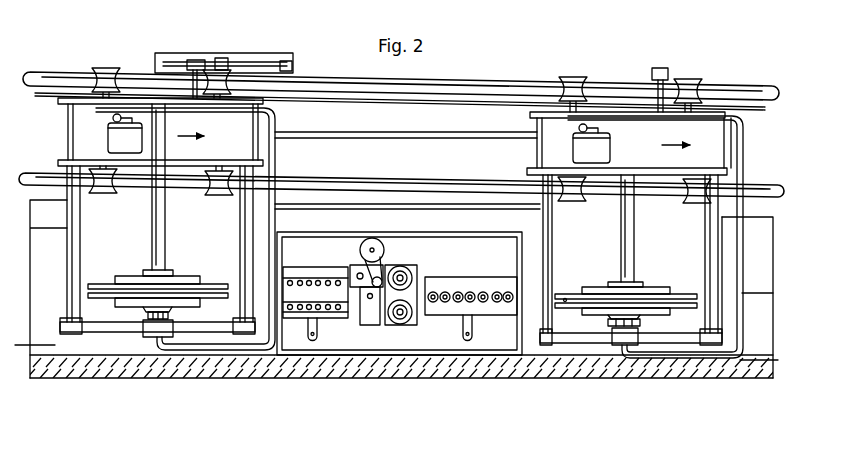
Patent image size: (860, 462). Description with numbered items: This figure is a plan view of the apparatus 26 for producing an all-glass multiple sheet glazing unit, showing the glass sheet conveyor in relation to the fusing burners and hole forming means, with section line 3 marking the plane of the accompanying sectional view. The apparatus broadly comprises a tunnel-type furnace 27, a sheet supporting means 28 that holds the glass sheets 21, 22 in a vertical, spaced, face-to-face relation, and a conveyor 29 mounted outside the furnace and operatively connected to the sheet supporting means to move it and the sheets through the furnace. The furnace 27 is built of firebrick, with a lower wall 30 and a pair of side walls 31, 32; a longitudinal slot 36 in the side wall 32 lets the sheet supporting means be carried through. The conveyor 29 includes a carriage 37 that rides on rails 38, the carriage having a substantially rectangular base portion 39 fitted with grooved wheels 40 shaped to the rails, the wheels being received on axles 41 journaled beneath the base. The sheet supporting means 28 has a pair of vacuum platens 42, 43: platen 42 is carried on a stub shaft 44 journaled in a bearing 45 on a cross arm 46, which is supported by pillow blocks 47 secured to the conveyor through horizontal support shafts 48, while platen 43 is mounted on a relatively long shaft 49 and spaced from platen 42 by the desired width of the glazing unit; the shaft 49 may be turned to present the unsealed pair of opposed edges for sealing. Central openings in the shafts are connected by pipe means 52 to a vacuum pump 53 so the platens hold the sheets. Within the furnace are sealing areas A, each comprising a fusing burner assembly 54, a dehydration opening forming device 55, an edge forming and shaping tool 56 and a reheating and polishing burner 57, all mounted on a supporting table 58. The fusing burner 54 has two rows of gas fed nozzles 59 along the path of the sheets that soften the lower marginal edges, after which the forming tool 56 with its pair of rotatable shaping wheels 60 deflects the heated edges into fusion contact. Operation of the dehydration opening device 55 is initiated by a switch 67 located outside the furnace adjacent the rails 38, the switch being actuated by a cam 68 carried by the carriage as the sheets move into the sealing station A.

The section line 3- 3 is at (15, 320).
The glass sheet 21 is at (107, 286).
The glass sheet 22 is at (92, 294).
The apparatus for producing the all-glass multiple sheet glazing unit 26 is at (93, 397).
The tunnel-type furnace 27 is at (292, 381).
The sheet supporting means 28 is at (130, 345).
The conveyor 29 is at (267, 104).
The lower wall 30 is at (751, 357).
The side wall 31 is at (403, 377).
The side wall 32 is at (750, 233).
The slot 36 is at (382, 218).
The carriage 37 is at (249, 142).
The rails 38 is at (60, 74).
The base portion 39 is at (242, 157).
The grooved wheels 40 is at (106, 68).
The axles 41 is at (68, 94).
The vacuum platen 42 is at (137, 304).
The vacuum platen 43 is at (137, 279).
The stub shaft 44 is at (173, 310).
The bearing 45 is at (160, 338).
The cross arm 46 is at (200, 332).
The pillow blocks 47 is at (73, 333).
The horizontal support shafts 48 is at (67, 214).
The long shaft 49 is at (160, 246).
The pipe means 52 is at (272, 218).
The vacuum pump 53 is at (140, 126).
The fusing burner assembly 54 is at (309, 267).
The dehydration opening forming device 55 is at (384, 268).
The edge forming and shaping tool 56 is at (418, 269).
The reheating and polishing burner 57 is at (488, 277).
The supporting table 58 is at (483, 349).
The gas fed nozzles 59 is at (327, 316).
The shaping wheels 60 is at (414, 279).
The switch 67 is at (226, 57).
The cam 68 is at (192, 59).
The sealing area A is at (378, 345).